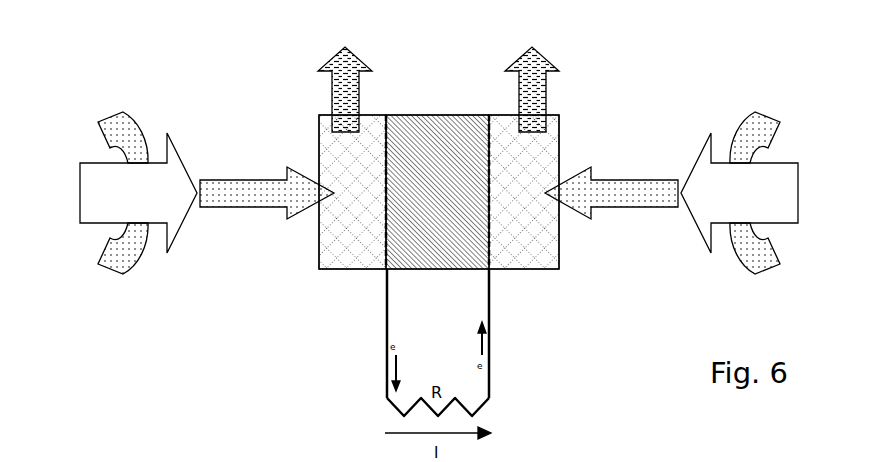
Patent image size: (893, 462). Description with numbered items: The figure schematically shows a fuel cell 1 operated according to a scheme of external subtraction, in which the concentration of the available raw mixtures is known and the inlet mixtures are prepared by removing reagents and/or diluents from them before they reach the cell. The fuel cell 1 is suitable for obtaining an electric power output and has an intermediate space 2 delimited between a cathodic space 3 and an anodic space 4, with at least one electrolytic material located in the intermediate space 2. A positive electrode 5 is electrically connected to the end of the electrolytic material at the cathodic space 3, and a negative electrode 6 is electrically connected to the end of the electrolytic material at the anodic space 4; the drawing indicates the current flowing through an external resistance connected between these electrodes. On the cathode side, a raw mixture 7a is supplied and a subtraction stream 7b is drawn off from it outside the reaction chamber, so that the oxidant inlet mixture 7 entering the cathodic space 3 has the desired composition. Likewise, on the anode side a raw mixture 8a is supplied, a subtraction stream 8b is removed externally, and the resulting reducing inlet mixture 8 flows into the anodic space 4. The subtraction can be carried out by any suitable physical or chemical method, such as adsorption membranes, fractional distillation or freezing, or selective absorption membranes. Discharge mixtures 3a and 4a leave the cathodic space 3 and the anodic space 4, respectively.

The fuel cell 1 is at (196, 76).
The intermediate space 2 is at (443, 247).
The cathodic space 3 is at (352, 240).
The discharge mixture 3a is at (332, 92).
The anodic space 4 is at (525, 248).
The discharge mixture 4a is at (546, 90).
The positive electrode 5 is at (387, 298).
The negative electrode 6 is at (490, 300).
The oxidant inlet mixture 7 is at (247, 195).
The raw mixture 7a is at (105, 201).
The subtraction stream 7b is at (128, 252).
The reducing inlet mixture 8 is at (625, 208).
The raw mixture 8a is at (785, 223).
The subtraction stream 8b is at (747, 123).